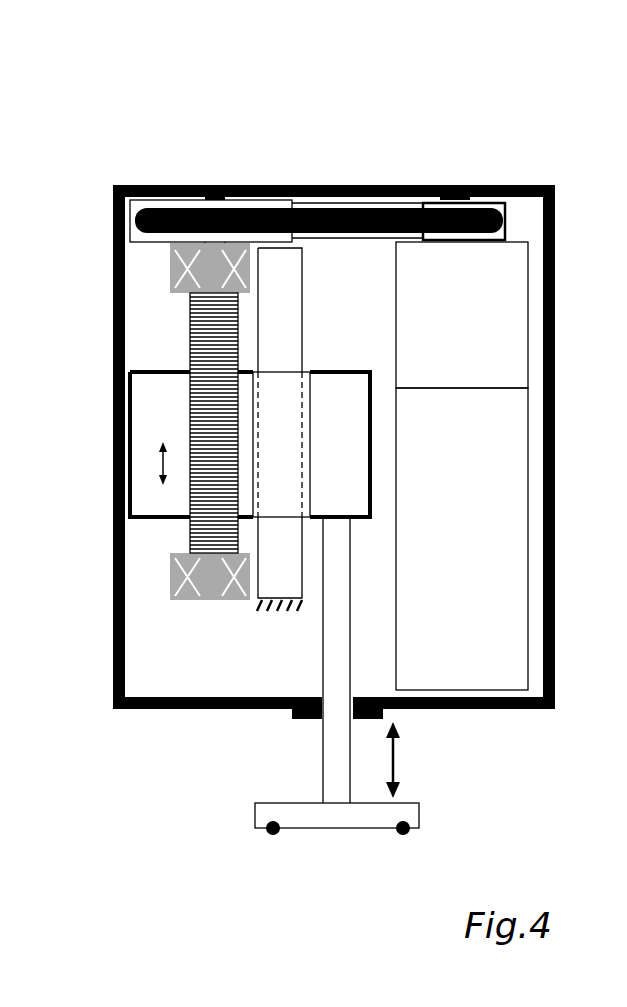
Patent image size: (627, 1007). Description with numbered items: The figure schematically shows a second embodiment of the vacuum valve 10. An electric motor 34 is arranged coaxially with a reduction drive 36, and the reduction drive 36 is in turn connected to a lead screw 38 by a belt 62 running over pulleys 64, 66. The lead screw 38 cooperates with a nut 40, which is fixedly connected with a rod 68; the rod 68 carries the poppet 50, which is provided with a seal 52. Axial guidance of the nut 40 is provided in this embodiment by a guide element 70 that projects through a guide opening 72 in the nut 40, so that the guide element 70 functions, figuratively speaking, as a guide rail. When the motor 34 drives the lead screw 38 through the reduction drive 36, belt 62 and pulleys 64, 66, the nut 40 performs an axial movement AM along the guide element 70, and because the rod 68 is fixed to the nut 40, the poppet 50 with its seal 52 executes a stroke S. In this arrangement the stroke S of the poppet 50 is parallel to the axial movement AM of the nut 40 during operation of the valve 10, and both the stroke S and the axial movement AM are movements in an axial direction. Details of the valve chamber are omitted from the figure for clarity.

The vacuum valve 10 is at (518, 140).
The pulley 66 is at (172, 186).
The belt 62 is at (350, 186).
The pulley 64 is at (441, 186).
The reduction drive 36 is at (446, 332).
The electric motor 34 is at (446, 556).
The nut 40 is at (158, 518).
The guide element 70 is at (275, 296).
The lead screw 38 is at (217, 403).
The guide opening 72 is at (257, 438).
The axial movement AM is at (157, 459).
The rod 68 is at (335, 752).
The stroke S is at (397, 762).
The poppet 50 is at (420, 817).
The seal 52 is at (275, 840).